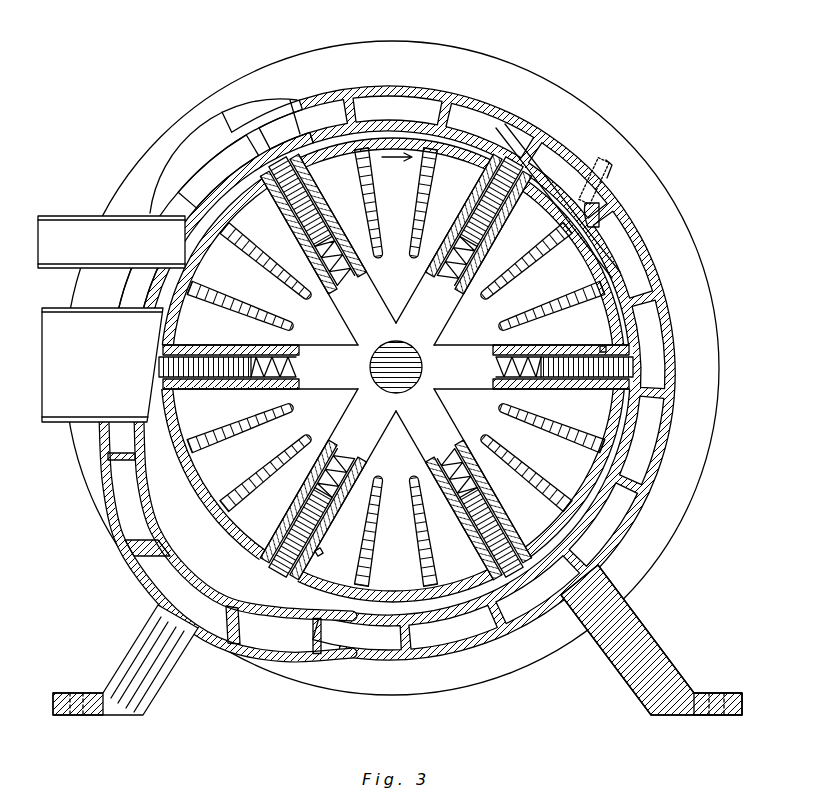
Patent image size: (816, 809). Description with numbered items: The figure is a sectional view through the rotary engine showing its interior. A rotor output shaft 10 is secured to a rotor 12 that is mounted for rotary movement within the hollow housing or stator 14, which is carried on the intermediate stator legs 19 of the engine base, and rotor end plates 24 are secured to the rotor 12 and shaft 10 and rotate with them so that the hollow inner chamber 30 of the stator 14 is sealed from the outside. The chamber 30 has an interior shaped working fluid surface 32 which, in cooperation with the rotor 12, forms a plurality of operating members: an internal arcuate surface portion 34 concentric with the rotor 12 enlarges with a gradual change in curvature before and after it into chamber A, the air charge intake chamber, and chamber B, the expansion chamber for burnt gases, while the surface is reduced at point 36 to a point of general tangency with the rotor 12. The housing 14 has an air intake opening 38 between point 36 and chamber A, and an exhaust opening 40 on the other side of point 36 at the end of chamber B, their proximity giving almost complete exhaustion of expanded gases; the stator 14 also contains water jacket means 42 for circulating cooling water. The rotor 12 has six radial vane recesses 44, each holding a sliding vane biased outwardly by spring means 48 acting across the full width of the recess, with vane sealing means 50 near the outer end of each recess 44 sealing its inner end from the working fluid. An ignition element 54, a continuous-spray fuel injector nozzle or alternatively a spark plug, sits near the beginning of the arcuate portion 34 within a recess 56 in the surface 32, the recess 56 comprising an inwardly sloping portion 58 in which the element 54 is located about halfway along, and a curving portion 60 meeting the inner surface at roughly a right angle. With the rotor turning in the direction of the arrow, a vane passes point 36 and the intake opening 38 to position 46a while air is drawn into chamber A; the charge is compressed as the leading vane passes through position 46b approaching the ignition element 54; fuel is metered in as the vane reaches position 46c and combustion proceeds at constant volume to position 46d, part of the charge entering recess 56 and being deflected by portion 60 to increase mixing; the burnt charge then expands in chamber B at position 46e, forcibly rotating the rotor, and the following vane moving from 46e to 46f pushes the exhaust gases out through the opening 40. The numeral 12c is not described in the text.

The rotor output shaft 10 is at (415, 384).
The rotor 12 is at (413, 133).
The mounting foot 12c is at (720, 690).
The hollow housing or stator 14 is at (340, 660).
The stator legs 19 is at (637, 697).
The rotor end plates 24 is at (510, 68).
The hollow inner chamber 30 is at (318, 128).
The working fluid surface 32 is at (264, 655).
The arcuate surface portion 34 is at (620, 413).
The point of tangency 36 is at (160, 300).
The air intake opening 38 is at (56, 216).
The exhaust opening 40 is at (55, 424).
The water jacket means 42 is at (476, 625).
The radial vane recesses 44 is at (353, 460).
The vane position 46a is at (300, 200).
The vane position 46b is at (489, 200).
The vane position 46c is at (586, 376).
The vane position 46d is at (489, 537).
The vane position 46e is at (307, 520).
The vane position 46f is at (214, 365).
The spring means 48 is at (438, 262).
The vane sealing means 50 is at (606, 352).
The ignition element 54 is at (606, 160).
The recess 56 is at (582, 211).
The inwardly sloping portion 58 is at (600, 160).
The curving portion 60 is at (590, 226).
The air charge intake chamber A is at (220, 178).
The expansion chamber B is at (190, 537).